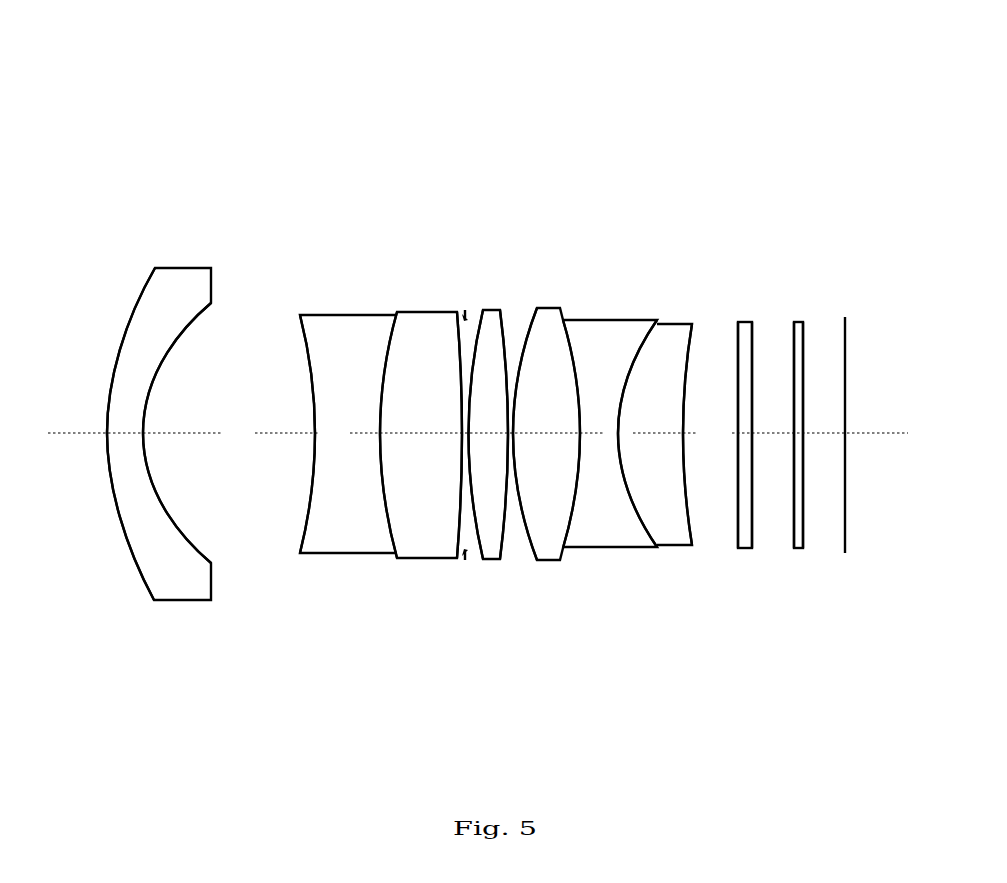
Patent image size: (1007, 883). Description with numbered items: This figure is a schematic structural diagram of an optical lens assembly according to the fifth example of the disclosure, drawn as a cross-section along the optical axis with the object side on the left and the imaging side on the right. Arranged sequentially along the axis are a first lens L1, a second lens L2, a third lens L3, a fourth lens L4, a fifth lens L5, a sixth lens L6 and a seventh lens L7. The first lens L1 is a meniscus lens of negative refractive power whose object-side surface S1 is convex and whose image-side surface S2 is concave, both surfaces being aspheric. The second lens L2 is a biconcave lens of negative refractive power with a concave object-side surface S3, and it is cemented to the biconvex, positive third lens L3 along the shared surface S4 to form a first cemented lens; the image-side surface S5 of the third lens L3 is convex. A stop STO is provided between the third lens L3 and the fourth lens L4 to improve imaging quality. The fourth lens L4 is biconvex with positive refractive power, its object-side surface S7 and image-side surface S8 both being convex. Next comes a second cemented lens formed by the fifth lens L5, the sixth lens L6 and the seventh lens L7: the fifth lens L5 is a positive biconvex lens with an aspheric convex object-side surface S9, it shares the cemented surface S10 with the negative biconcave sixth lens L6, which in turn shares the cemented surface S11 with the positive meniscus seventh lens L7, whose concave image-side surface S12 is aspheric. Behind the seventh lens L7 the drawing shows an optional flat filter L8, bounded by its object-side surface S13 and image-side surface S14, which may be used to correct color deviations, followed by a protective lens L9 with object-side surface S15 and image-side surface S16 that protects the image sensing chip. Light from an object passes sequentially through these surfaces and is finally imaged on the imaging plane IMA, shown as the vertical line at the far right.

The first lens L1 is at (158, 550).
The second lens L2 is at (303, 537).
The third lens L3 is at (393, 508).
The fourth lens L4 is at (493, 538).
The fifth lens L5 is at (550, 520).
The sixth lens L6 is at (603, 523).
The seventh lens L7 is at (677, 492).
The filter L8 is at (745, 550).
The protective lens L9 is at (797, 552).
The stop STO is at (465, 317).
The imaging plane IMA is at (847, 340).
The object-side surface of the first lens S1 is at (140, 312).
The image-side surface of the first lens S2 is at (180, 330).
The object-side surface of the second lens S3 is at (305, 350).
The cemented surface between the second and third lenses S4 is at (382, 360).
The image-side surface of the third lens S5 is at (458, 385).
The object-side surface of the fourth lens S7 is at (478, 323).
The image-side surface of the fourth lens S8 is at (507, 380).
The object-side surface of the fifth lens S9 is at (522, 330).
The cemented surface between the fifth and sixth lenses S10 is at (580, 370).
The cemented surface between the sixth and seventh lenses S11 is at (628, 372).
The image-side surface of the seventh lens S12 is at (683, 375).
The object-side surface of the filter S13 is at (738, 362).
The image-side surface of the filter S14 is at (752, 345).
The object-side surface of the protective lens S15 is at (796, 330).
The image-side surface of the protective lens S16 is at (805, 400).